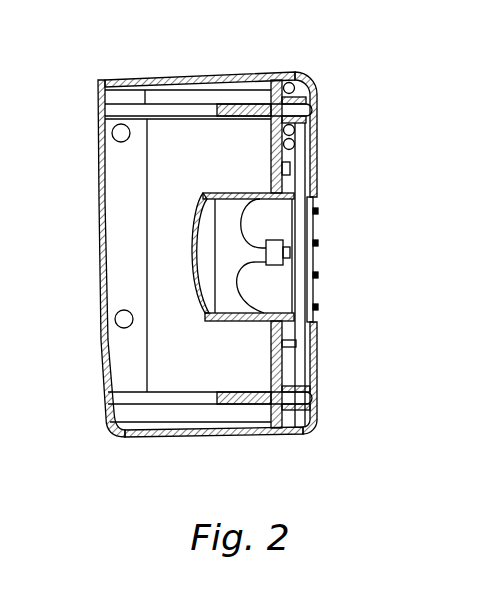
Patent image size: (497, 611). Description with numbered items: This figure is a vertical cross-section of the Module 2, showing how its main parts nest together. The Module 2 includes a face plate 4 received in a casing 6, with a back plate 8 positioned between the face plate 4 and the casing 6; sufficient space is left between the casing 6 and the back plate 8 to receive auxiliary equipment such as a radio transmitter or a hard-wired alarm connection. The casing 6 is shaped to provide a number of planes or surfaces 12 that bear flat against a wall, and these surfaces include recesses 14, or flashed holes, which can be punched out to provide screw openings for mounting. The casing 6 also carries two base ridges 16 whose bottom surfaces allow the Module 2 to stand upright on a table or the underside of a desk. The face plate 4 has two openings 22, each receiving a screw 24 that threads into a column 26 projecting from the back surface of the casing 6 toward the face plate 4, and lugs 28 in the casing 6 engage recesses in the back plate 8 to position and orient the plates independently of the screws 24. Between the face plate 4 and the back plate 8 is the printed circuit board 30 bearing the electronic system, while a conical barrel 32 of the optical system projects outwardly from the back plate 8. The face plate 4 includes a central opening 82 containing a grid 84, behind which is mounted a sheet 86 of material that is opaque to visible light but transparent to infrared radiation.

The Module 2 is at (236, 64).
The face plate 4 is at (313, 74).
The casing 6 is at (146, 79).
The back plate 8 is at (271, 361).
The planes or surfaces 12 is at (113, 240).
The recesses 14 is at (112, 133).
The base ridges 16 is at (125, 437).
The openings 22 is at (314, 119).
The screw 24 is at (311, 106).
The column 26 is at (186, 120).
The lugs 28 is at (263, 434).
The printed circuit board 30 is at (284, 357).
The conical barrel 32 is at (233, 303).
The central opening 82 is at (316, 206).
The grid 84 is at (316, 243).
The sheet 86 is at (316, 289).